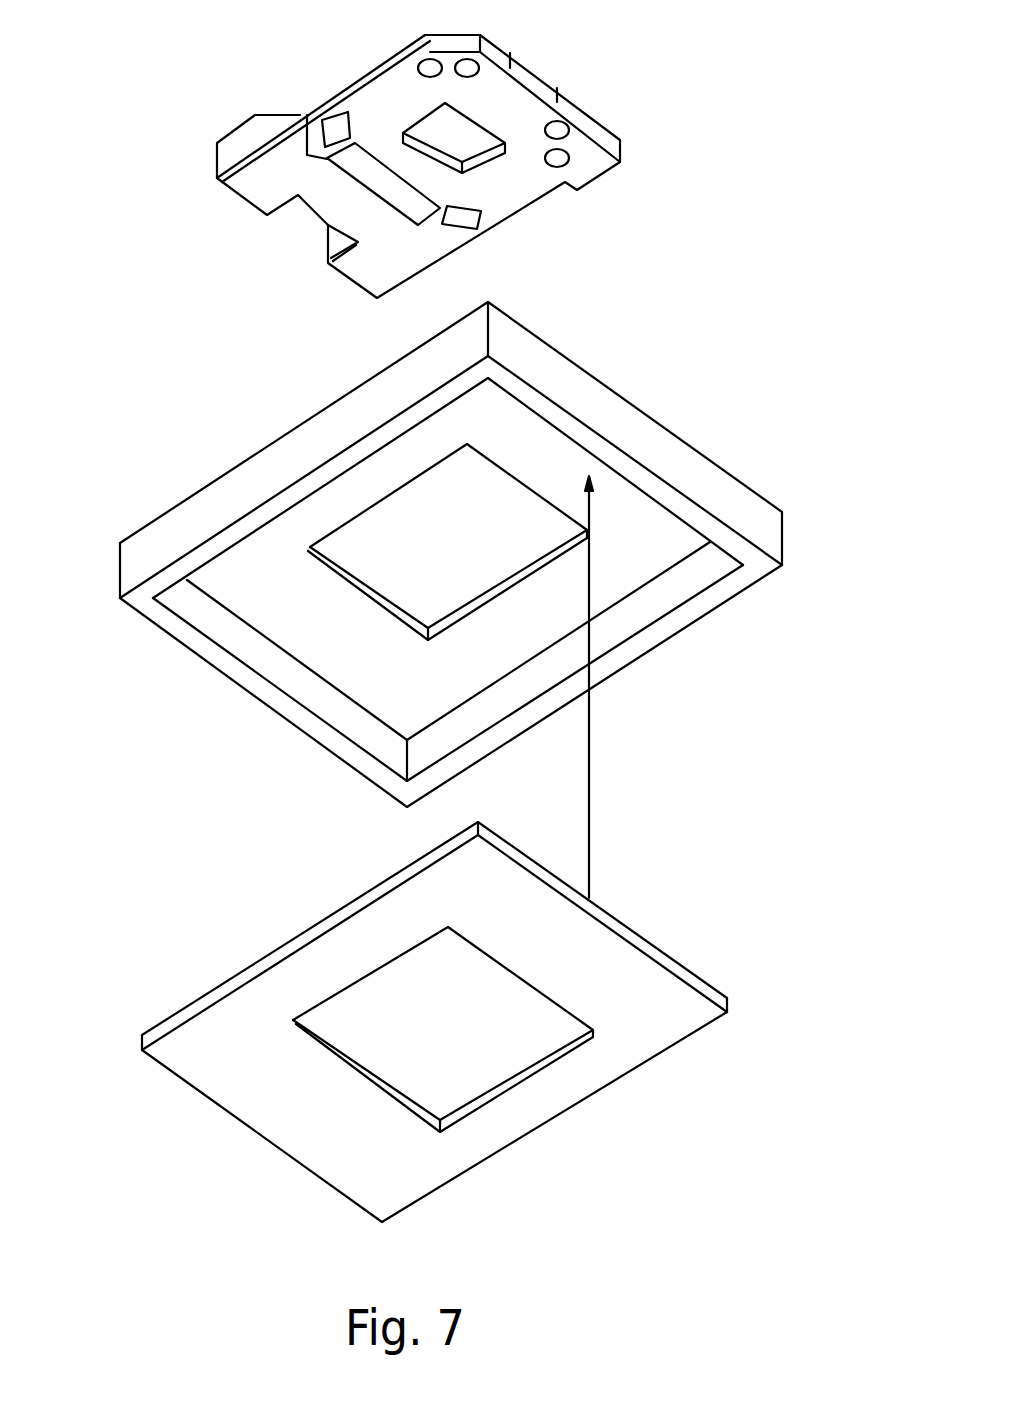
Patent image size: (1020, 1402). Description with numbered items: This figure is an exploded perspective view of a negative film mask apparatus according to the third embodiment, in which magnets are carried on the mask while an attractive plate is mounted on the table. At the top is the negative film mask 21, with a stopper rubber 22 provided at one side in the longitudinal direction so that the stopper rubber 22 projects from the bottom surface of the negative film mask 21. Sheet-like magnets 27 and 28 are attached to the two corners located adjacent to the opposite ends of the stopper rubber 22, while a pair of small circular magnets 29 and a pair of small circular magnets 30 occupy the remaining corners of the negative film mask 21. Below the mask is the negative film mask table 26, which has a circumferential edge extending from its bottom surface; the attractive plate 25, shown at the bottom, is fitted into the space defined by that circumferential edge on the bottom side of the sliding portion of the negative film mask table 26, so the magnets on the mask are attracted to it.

The negative film mask 21 is at (622, 133).
The stopper rubber 22 is at (374, 185).
The attractive plate 25 is at (677, 953).
The negative film mask table 26 is at (672, 425).
The magnet 27 is at (336, 128).
The magnet 28 is at (470, 218).
The small circular magnets 29 is at (569, 158).
The small circular magnets 30 is at (467, 59).